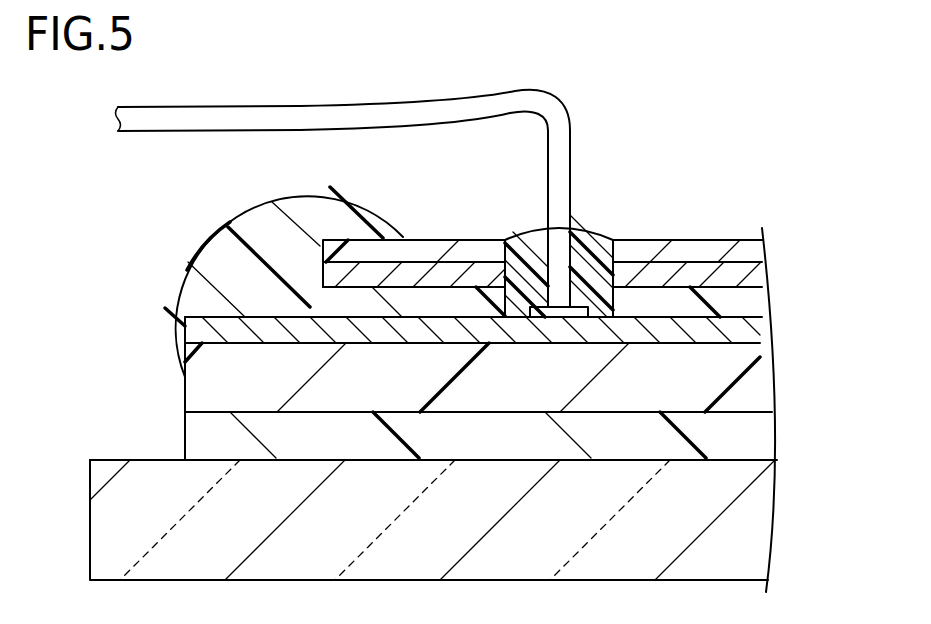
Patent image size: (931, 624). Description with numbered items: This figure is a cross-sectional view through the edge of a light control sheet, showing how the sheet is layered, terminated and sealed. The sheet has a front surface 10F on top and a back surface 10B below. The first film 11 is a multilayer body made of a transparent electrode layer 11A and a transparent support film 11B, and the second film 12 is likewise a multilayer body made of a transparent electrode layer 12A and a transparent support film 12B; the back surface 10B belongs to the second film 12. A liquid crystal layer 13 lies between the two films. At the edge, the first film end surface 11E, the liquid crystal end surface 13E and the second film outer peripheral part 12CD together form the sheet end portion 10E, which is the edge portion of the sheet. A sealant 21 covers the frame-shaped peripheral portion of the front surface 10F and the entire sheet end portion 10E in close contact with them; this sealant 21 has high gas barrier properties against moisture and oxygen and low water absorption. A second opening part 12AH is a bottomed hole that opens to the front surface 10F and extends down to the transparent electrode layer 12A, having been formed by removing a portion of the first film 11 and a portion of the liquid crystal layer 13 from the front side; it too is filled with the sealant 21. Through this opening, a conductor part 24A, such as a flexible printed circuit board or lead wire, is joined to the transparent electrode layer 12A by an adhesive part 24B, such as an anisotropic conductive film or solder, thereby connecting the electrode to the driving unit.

The back surface 10B is at (750, 428).
The front surface 10F is at (722, 238).
The sheet end portion 10E is at (284, 249).
The first film 11 is at (742, 278).
The transparent electrode layer 11A is at (748, 276).
The transparent support film 11B is at (748, 252).
The first film end surface 11E is at (320, 247).
The second film 12 is at (518, 360).
The transparent electrode layer 12A is at (748, 331).
The transparent support film 12B is at (757, 380).
The second opening part 12AH is at (606, 236).
The second film outer peripheral part 12CD is at (264, 316).
The liquid crystal layer 13 is at (748, 302).
The liquid crystal end surface 13E is at (320, 278).
The sealant 21 is at (304, 186).
The conductor part 24A is at (238, 116).
The adhesive part 24B is at (542, 305).